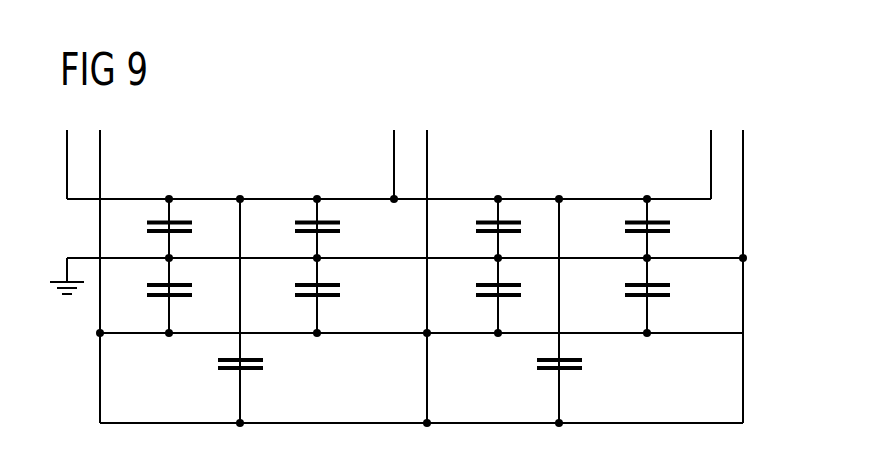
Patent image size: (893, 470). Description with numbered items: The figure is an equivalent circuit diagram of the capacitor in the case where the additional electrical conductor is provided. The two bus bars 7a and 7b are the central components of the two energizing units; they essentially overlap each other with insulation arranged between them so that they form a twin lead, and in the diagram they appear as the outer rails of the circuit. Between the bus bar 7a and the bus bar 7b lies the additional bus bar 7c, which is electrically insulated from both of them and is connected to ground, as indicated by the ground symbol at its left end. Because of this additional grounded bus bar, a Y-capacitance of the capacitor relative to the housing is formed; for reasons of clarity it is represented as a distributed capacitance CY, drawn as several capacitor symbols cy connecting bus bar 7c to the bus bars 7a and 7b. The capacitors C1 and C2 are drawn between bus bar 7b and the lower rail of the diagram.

The bus bar 7a is at (467, 199).
The bus bar 7b is at (472, 333).
The additional bus bar 7c is at (393, 258).
The first capacitor C1 is at (253, 370).
The second capacitor C2 is at (580, 370).
The distributed capacitance CY cy is at (663, 254).